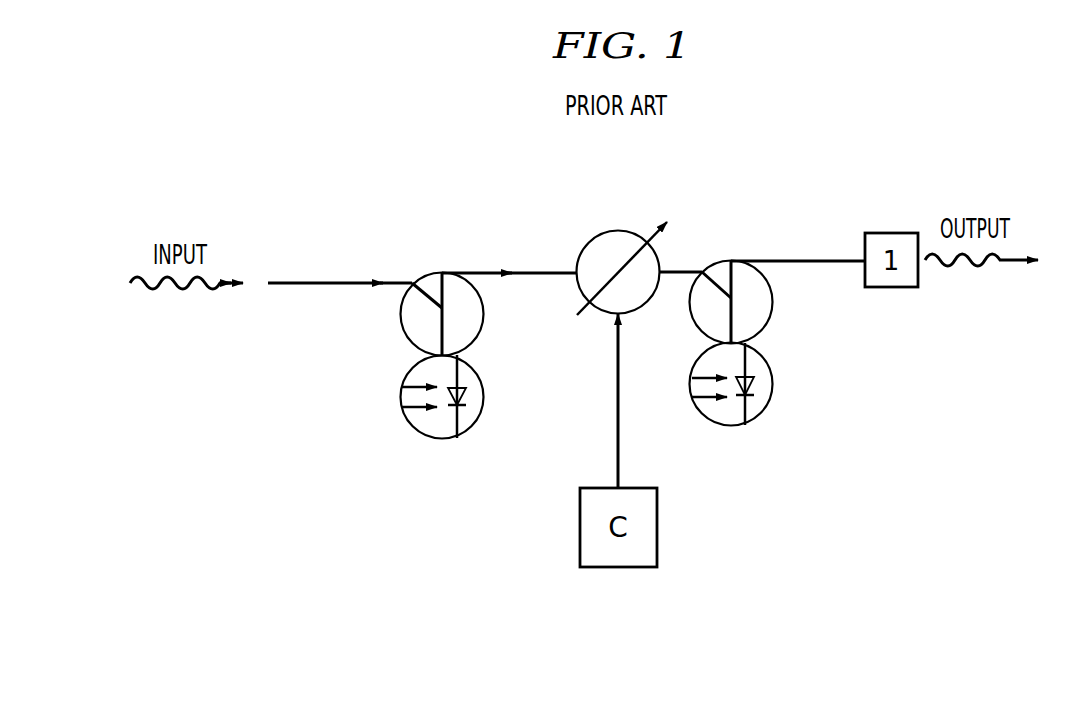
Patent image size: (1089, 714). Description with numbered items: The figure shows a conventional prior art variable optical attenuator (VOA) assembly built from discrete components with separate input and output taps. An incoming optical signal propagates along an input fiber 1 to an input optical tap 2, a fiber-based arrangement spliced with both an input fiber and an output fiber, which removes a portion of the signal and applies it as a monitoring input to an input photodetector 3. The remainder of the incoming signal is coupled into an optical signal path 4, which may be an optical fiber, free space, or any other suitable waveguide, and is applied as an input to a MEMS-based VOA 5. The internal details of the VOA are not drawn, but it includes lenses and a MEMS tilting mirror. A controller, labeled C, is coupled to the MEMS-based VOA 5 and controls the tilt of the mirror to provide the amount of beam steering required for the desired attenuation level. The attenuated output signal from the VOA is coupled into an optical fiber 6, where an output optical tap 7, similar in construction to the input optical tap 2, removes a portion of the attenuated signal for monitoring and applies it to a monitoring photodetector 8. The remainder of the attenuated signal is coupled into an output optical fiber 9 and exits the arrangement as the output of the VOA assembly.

The input fiber 1 is at (313, 283).
The input optical tap 2 is at (400, 318).
The input photodetector 3 is at (407, 420).
The optical signal path 4 is at (544, 271).
The MEMS-based VOA 5 is at (610, 231).
The optical fiber 6 is at (675, 270).
The output optical tap 7 is at (773, 313).
The monitoring photodetector 8 is at (768, 403).
The output optical fiber 9 is at (793, 260).